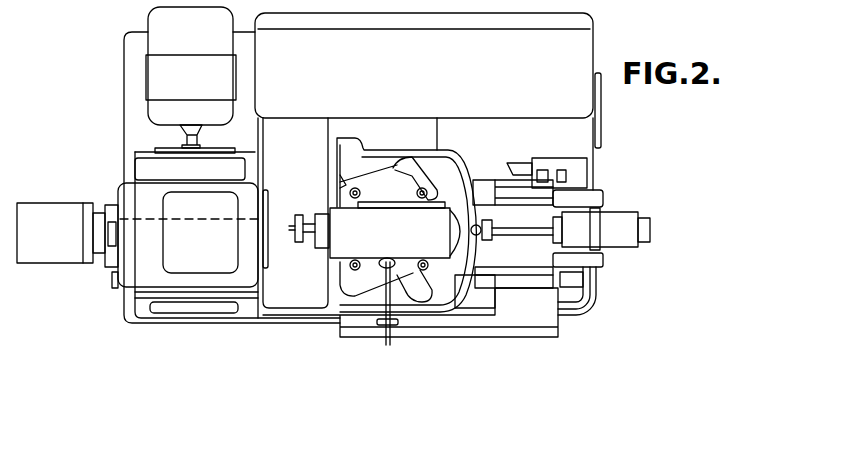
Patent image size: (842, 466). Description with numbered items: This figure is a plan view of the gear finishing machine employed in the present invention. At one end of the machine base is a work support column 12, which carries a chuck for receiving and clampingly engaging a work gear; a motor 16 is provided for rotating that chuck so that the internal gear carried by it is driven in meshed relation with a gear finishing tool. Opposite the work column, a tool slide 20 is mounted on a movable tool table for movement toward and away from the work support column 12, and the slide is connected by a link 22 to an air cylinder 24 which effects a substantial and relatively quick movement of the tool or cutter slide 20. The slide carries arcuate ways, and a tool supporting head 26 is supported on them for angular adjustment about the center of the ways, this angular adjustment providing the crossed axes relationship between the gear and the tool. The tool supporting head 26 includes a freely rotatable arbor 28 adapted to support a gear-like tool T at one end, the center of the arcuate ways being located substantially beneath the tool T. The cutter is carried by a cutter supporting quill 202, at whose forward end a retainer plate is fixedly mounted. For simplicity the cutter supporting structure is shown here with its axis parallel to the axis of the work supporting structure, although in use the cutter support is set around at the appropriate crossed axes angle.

The work support column 12 is at (135, 292).
The motor 16 is at (148, 17).
The tool slide 20 is at (452, 162).
The link 22 is at (540, 222).
The air cylinder 24 is at (628, 245).
The tool supporting head 26 is at (393, 239).
The arbor 28 is at (312, 238).
The cutter supporting quill 202 is at (322, 212).
The gear-like tool T is at (300, 214).